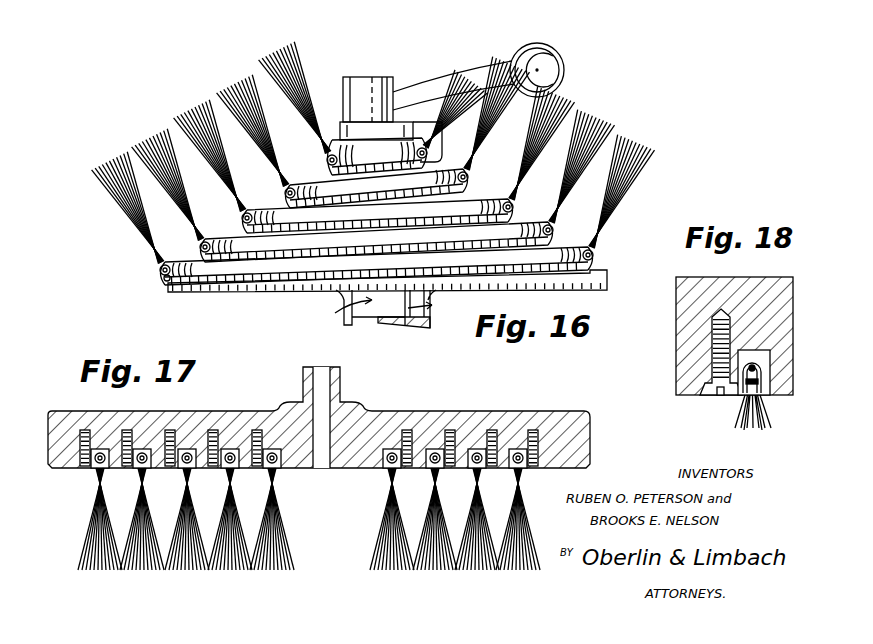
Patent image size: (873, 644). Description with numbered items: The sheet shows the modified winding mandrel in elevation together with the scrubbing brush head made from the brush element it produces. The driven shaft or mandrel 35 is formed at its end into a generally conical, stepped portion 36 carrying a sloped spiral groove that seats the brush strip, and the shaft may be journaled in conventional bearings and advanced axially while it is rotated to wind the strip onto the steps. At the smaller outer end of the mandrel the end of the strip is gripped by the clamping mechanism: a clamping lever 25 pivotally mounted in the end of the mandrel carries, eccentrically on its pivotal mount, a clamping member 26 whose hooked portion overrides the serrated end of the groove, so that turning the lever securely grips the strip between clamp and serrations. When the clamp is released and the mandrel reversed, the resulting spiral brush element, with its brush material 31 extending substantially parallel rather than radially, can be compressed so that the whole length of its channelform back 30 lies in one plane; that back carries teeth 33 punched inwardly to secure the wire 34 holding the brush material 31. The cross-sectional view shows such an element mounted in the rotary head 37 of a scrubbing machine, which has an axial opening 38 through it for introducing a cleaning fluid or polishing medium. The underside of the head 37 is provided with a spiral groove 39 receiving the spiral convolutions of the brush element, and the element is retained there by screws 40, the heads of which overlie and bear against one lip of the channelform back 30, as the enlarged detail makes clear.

In FIG. 16, the clamping lever 25 is at (561, 72).
In FIG. 16, the clamping member 26 is at (446, 122).
In FIG. 16, the channelform back 30 is at (159, 271).
In FIG. 17, the channelform back 30 is at (520, 449).
In FIG. 18, the channelform back 30 is at (768, 380).
In FIG. 16, the brush bristles 31 is at (157, 147).
In FIG. 17, the brush bristles 31 is at (82, 550).
In FIG. 18, the brush bristles 31 is at (754, 412).
In FIG. 18, the teeth 33 is at (748, 396).
In FIG. 16, the wire 34 is at (164, 280).
In FIG. 16, the driven shaft or mandrel 35 is at (371, 316).
In FIG. 16, the lower tier disc 36 is at (246, 268).
In FIG. 17, the rotary head 37 is at (399, 411).
In FIG. 18, the rotary head 37 is at (683, 345).
In FIG. 17, the axial opening 38 is at (324, 468).
In FIG. 17, the spiral groove 39 is at (384, 463).
In FIG. 17, the screws 40 is at (95, 468).
In FIG. 18, the screws 40 is at (712, 397).